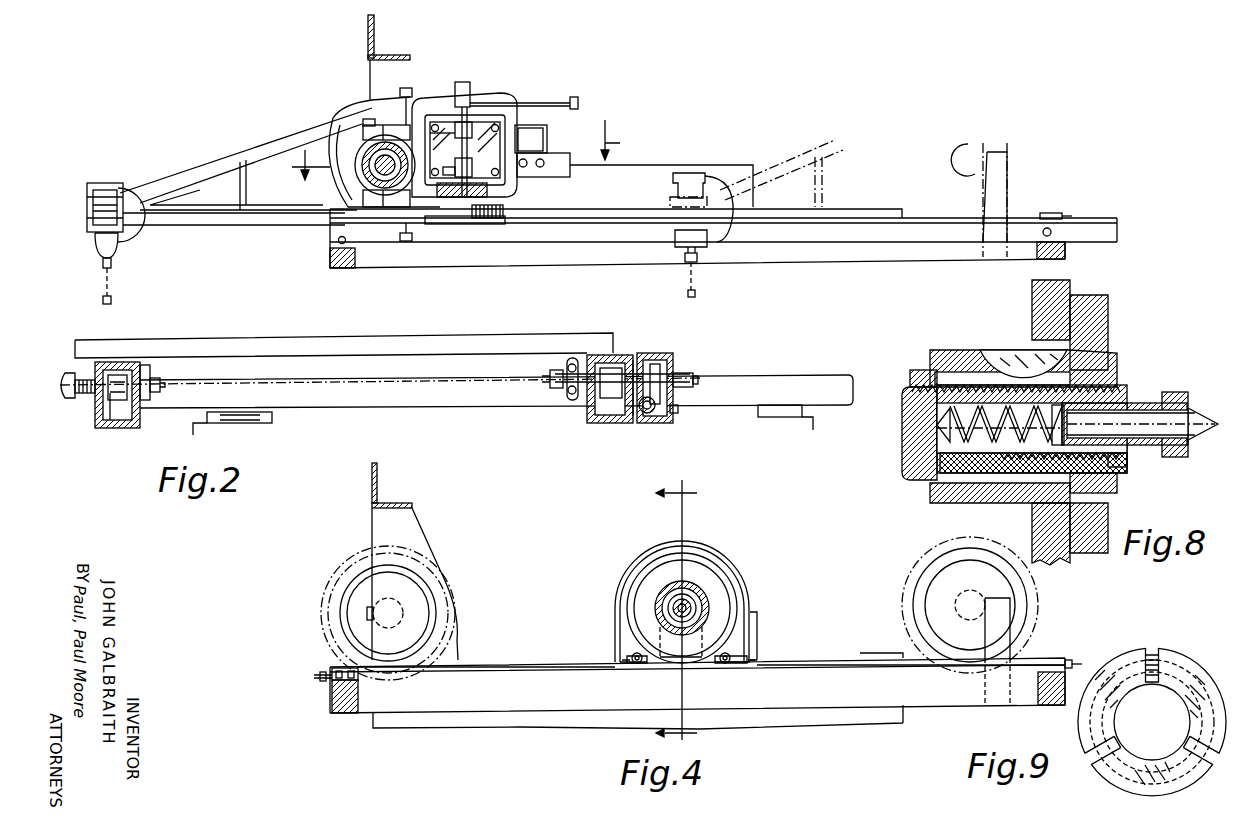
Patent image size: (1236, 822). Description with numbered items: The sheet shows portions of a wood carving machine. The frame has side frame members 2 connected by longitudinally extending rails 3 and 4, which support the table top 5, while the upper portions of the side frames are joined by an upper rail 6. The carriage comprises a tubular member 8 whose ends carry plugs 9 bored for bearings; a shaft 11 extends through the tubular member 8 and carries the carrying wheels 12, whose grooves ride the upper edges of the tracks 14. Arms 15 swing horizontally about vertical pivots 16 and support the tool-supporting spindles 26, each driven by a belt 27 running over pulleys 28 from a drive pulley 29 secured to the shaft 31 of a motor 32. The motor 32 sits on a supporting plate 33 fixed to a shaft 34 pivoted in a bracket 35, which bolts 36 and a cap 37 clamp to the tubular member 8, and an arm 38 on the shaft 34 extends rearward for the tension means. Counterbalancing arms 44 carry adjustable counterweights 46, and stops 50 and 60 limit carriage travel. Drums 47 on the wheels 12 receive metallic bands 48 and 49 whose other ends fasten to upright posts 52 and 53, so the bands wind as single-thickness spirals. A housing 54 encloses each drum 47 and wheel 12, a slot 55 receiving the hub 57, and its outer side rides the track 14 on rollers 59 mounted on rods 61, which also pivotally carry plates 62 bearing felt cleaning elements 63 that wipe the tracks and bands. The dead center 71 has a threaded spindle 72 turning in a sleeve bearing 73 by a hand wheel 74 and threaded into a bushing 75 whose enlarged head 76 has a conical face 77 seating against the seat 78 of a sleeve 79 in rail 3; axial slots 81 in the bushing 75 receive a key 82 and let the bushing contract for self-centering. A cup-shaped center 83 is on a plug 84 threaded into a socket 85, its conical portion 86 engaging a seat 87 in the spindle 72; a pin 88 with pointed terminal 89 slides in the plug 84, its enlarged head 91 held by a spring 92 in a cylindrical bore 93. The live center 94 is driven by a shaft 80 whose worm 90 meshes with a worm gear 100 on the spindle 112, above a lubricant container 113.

In FIG. 2, the side frame member 2 is at (368, 68).
In FIG. 4, the side frame member 2 is at (415, 538).
In FIG. 2, the longitudinal rail 3 is at (68, 445).
In FIG. 8, the longitudinal rail 3 is at (1070, 283).
In FIG. 2, the longitudinal rail 4 is at (615, 423).
In FIG. 2, the table top 5 is at (277, 332).
In FIG. 4, the table top 5 is at (676, 609).
In FIG. 2, the upper rail 6 is at (374, 42).
In FIG. 4, the upper rail 6 is at (372, 483).
In FIG. 2, the tubular member 8 is at (357, 162).
In FIG. 4, the tubular member 8 is at (705, 597).
In FIG. 4, the plug 9 is at (700, 617).
In FIG. 2, the shaft 11 is at (375, 175).
In FIG. 4, the shaft 11 is at (668, 612).
In FIG. 4, the carrying wheel 12 is at (353, 592).
In FIG. 2, the track 14 is at (798, 255).
In FIG. 4, the track 14 is at (828, 693).
In FIG. 2, the arm 15 is at (262, 147).
In FIG. 2, the vertical pivot 16 is at (406, 90).
In FIG. 2, the tool-supporting spindle 26 is at (103, 262).
In FIG. 2, the belt 27 is at (185, 222).
In FIG. 2, the pulley 28 is at (87, 228).
In FIG. 2, the drive pulley 29 is at (505, 208).
In FIG. 2, the motor shaft 31 is at (470, 224).
In FIG. 2, the motor 32 is at (433, 100).
In FIG. 2, the supporting plate 33 is at (487, 128).
In FIG. 2, the shaft 34 is at (468, 157).
In FIG. 2, the bracket 35 is at (407, 120).
In FIG. 2, the bolt 36 is at (345, 122).
In FIG. 2, the cap 37 is at (335, 187).
In FIG. 2, the arm 38 is at (542, 100).
In FIG. 2, the counterbalancing arm 44 is at (568, 172).
In FIG. 2, the counterweight 46 is at (545, 133).
In FIG. 4, the drum 47 is at (718, 570).
In FIG. 4, the metallic band 48 is at (497, 667).
In FIG. 4, the metallic band 49 is at (853, 667).
In FIG. 2, the stop 50 is at (998, 152).
In FIG. 4, the stop 50 is at (1000, 622).
In FIG. 2, the upright post 52 is at (330, 249).
In FIG. 4, the upright post 52 is at (330, 668).
In FIG. 2, the upright post 53 is at (1063, 215).
In FIG. 4, the upright post 53 is at (1067, 658).
In FIG. 2, the housing 54 is at (368, 100).
In FIG. 4, the housing 54 is at (452, 578).
In FIG. 4, the slot 55 is at (668, 665).
In FIG. 4, the hub 57 is at (402, 600).
In FIG. 4, the roller 59 is at (620, 652).
In FIG. 4, the stop 60 is at (367, 614).
In FIG. 4, the rod 61 is at (637, 665).
In FIG. 4, the plate 62 is at (627, 658).
In FIG. 4, the cleaning element 63 is at (630, 667).
In FIG. 2, the work supporting center 71 is at (157, 372).
In FIG. 8, the work supporting center 71 is at (1174, 368).
In FIG. 8, the threaded spindle 72 is at (910, 445).
In FIG. 2, the sleeve bearing 73 is at (110, 420).
In FIG. 2, the hand wheel 74 is at (73, 400).
In FIG. 8, the bushing 75 is at (920, 482).
In FIG. 9, the bushing 75 is at (1195, 667).
In FIG. 8, the enlarged head 76 is at (1117, 487).
In FIG. 9, the enlarged head 76 is at (1207, 687).
In FIG. 8, the conical face 77 is at (1107, 353).
In FIG. 8, the conical seat 78 is at (1110, 490).
In FIG. 8, the sleeve 79 is at (973, 503).
In FIG. 2, the shaft 80 is at (652, 415).
In FIG. 9, the axial slot 81 is at (1153, 655).
In FIG. 8, the key 82 is at (1000, 348).
In FIG. 8, the cup-shaped center 83 is at (1190, 407).
In FIG. 2, the plug 84 is at (157, 395).
In FIG. 8, the plug 84 is at (1167, 393).
In FIG. 8, the threaded socket 85 is at (1115, 397).
In FIG. 8, the conical portion 86 is at (1127, 463).
In FIG. 8, the seat 87 is at (1123, 400).
In FIG. 8, the pin 88 is at (1188, 448).
In FIG. 2, the pointed terminal 89 is at (165, 386).
In FIG. 2, the worm 90 is at (667, 415).
In FIG. 8, the enlarged head 91 is at (1057, 442).
In FIG. 8, the spring 92 is at (953, 433).
In FIG. 8, the cylindrical bore 93 is at (1013, 445).
In FIG. 2, the live center 94 is at (547, 398).
In FIG. 2, the worm gear 100 is at (647, 365).
In FIG. 2, the spindle 112 is at (617, 378).
In FIG. 2, the container 113 is at (640, 423).